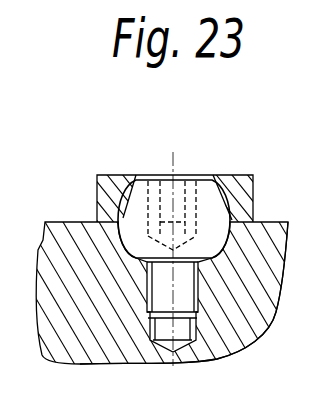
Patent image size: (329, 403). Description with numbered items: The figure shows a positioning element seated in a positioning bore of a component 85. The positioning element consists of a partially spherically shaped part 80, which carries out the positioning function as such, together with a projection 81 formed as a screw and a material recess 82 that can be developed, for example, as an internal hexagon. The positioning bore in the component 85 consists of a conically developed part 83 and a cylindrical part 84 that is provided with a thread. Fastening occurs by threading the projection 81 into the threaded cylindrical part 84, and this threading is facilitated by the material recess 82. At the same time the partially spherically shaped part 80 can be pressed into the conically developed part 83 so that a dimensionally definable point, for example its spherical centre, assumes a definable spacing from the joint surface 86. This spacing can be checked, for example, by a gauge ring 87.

The partially spherically shaped part 80 is at (210, 208).
The projection formed as screw 81 is at (167, 287).
The material recess 82 is at (182, 212).
The conically developed part 83 is at (214, 269).
The cylindrical part 84 is at (213, 360).
The component 85 is at (272, 240).
The joint surface 86 is at (68, 222).
The gauge ring 87 is at (113, 187).